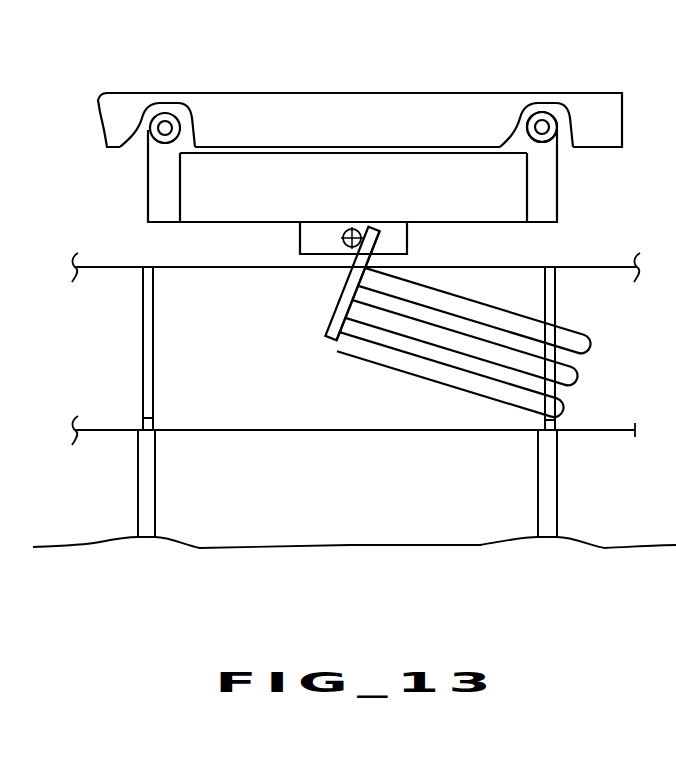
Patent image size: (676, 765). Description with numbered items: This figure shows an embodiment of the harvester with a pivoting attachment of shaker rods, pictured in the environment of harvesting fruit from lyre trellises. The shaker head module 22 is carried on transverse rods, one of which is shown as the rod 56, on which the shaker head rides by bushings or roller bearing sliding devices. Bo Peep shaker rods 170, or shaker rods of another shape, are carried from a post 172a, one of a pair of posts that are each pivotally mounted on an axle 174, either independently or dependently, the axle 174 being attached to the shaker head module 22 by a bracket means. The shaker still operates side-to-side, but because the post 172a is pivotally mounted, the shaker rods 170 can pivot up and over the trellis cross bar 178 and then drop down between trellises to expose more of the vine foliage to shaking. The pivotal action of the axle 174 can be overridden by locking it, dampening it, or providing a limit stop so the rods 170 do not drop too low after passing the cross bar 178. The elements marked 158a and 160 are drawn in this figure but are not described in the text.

The shaker head module 22 is at (287, 163).
The pivot pin 158a is at (545, 122).
The transverse rod 56 is at (549, 124).
The axle 174 is at (350, 246).
The post 172a is at (336, 304).
The shaker rods 170 is at (410, 358).
The trellis cross bar 178 is at (553, 424).
The support leg 160 is at (560, 497).